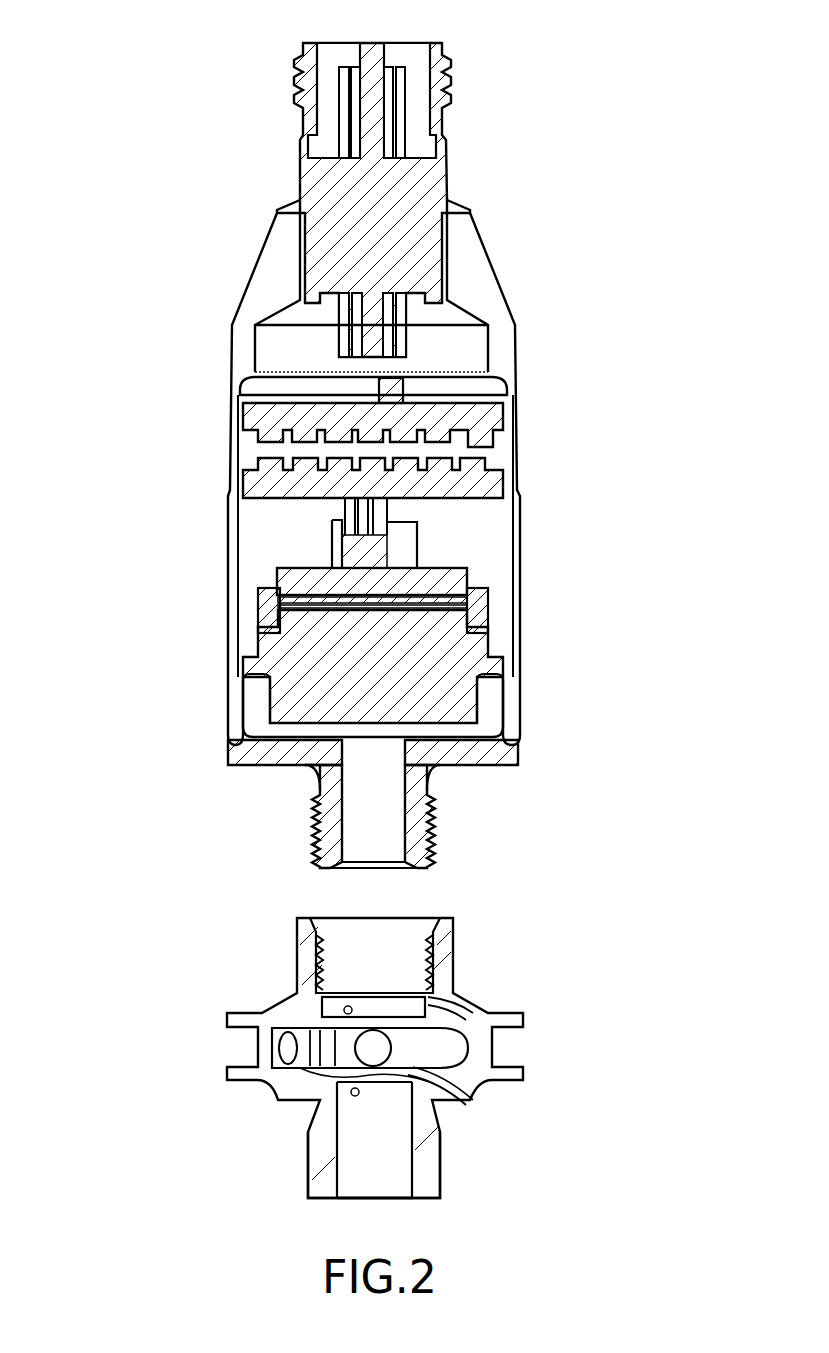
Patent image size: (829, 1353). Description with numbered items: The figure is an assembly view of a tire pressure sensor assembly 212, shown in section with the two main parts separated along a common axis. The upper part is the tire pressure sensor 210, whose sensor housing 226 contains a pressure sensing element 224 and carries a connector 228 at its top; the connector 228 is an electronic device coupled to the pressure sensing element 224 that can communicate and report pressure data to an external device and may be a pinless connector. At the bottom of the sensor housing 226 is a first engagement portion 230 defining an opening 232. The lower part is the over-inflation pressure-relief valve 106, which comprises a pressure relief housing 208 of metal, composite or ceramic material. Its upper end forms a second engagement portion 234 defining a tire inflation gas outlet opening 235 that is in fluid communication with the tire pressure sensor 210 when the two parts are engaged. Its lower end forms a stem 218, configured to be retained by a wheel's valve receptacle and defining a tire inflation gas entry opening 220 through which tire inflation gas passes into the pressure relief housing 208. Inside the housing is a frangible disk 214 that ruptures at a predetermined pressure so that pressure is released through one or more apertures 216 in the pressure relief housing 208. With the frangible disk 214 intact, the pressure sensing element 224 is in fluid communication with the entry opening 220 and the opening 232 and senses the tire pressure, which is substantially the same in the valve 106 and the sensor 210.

The over-inflation pressure-relief valve 106 is at (528, 910).
The pressure relief housing 208 is at (447, 977).
The tire pressure sensor 210 is at (650, 38).
The tire pressure sensor assembly 212 is at (128, 1215).
The frangible disk 214 is at (380, 1054).
The apertures 216 is at (280, 1047).
The stem 218 is at (433, 1165).
The tire inflation gas entry opening 220 is at (388, 1197).
The pressure sensing element 224 is at (458, 583).
The sensor housing 226 is at (492, 753).
The connector 228 is at (413, 43).
The first engagement portion 230 is at (430, 833).
The opening 232 is at (372, 863).
The second engagement portion 234 is at (433, 963).
The tire inflation gas outlet opening 235 is at (330, 943).